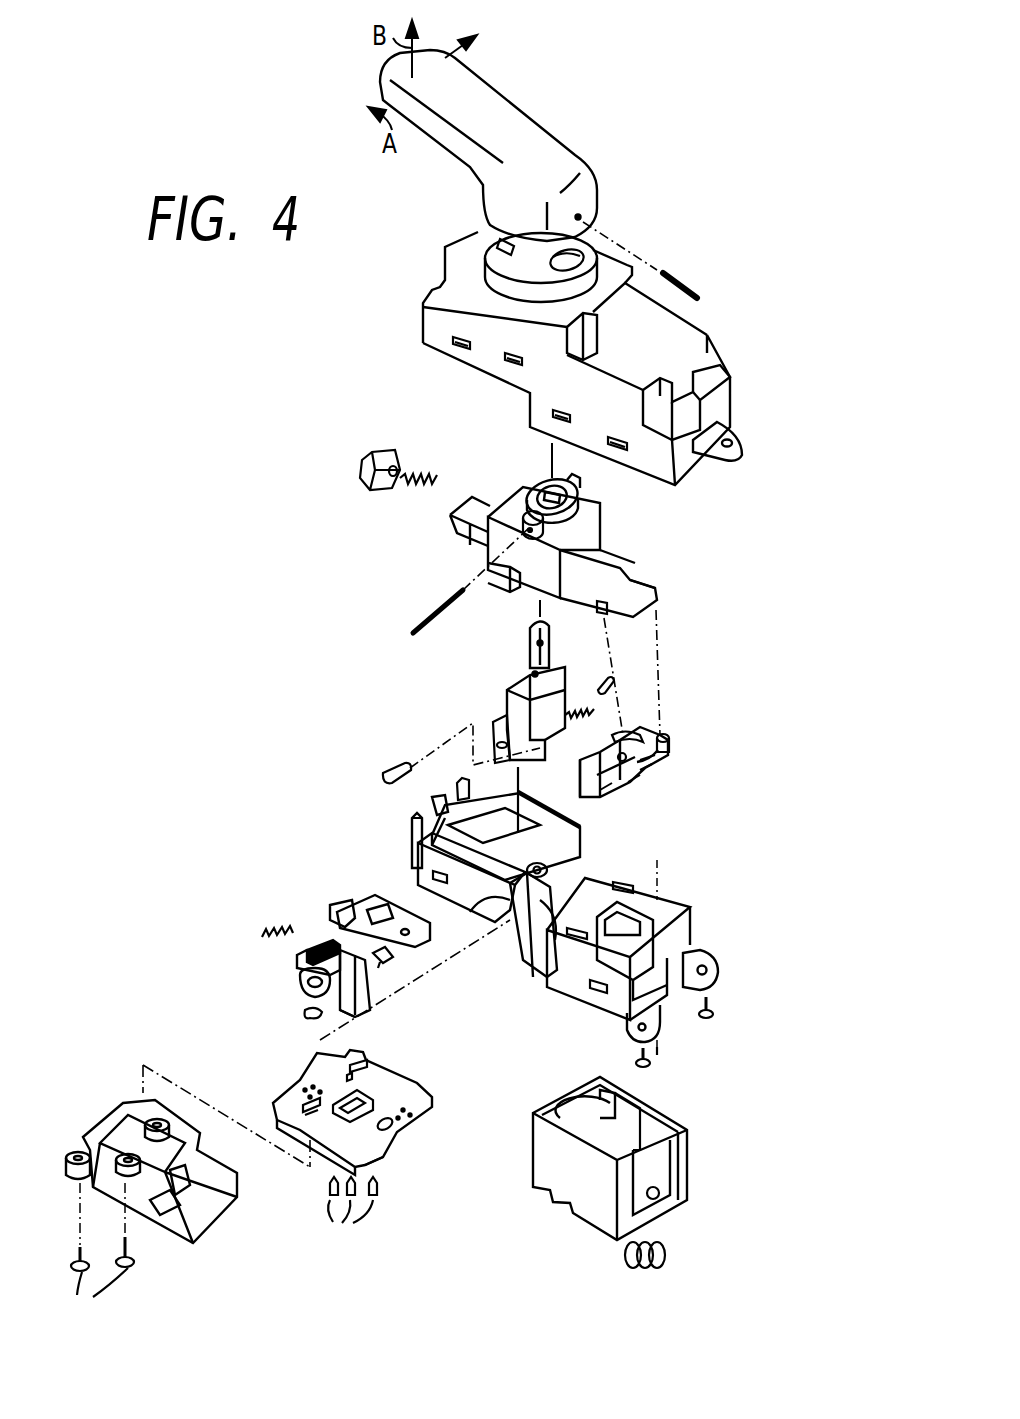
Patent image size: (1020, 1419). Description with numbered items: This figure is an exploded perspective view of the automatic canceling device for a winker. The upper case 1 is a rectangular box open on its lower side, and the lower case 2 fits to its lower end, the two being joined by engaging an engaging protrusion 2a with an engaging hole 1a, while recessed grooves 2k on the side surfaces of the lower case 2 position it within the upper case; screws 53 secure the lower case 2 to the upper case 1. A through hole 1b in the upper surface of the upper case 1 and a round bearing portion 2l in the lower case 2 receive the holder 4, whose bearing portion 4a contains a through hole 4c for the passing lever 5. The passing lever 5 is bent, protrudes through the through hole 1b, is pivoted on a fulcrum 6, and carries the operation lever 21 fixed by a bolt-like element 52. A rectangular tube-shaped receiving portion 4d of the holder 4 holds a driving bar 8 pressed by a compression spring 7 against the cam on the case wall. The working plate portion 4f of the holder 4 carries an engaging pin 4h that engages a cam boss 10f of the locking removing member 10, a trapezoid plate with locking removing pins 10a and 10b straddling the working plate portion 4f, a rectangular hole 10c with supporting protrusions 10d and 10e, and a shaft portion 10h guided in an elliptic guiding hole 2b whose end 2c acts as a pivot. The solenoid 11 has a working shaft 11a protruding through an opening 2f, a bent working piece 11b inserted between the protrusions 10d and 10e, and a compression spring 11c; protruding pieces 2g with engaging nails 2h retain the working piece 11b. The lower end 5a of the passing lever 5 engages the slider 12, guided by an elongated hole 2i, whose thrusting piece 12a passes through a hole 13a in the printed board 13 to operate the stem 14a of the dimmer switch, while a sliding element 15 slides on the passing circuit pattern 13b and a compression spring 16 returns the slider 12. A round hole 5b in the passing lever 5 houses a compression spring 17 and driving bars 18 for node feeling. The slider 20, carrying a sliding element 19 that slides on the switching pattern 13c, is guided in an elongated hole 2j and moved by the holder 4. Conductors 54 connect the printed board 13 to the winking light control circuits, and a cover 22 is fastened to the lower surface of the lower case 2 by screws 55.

The upper case 1 is at (709, 331).
The engaging hole 1a is at (460, 347).
The through hole 1b is at (573, 255).
The lower case 2 is at (690, 907).
The engaging protrusion 2a is at (437, 884).
The guiding hole 2b is at (543, 962).
The end of guiding hole 2c is at (627, 880).
The opening 2f is at (667, 950).
The protruding piece 2g is at (713, 1000).
The engaging nail 2h is at (715, 957).
The elongated hole 2i is at (410, 830).
The elongated hole 2j is at (537, 860).
The recessed groove 2k is at (503, 920).
The bearing portion 2l is at (565, 822).
The holder 4 is at (612, 560).
The bearing portion 4a is at (575, 515).
The through hole 4c is at (546, 488).
The receiving portion 4d is at (463, 495).
The working plate portion 4f is at (652, 590).
The engaging pin 4h is at (600, 614).
The passing lever 5 is at (505, 693).
The lower end of passing lever 5a is at (505, 766).
The round hole 5b is at (496, 727).
The fulcrum 6 is at (452, 597).
The compression spring 7 is at (422, 480).
The driving bar 8 is at (385, 450).
The locking removing member 10 is at (676, 748).
The locking removing pin 10a is at (665, 737).
The locking removing pin 10b is at (635, 780).
The rectangular hole 10c is at (640, 762).
The supporting protrusion 10d is at (648, 777).
The supporting protrusion 10e is at (616, 750).
The cam boss 10f is at (622, 732).
The shaft portion 10h is at (608, 787).
The solenoid 11 is at (688, 1122).
The working shaft 11a is at (657, 1195).
The working piece 11b is at (648, 1127).
The compression spring 11c is at (623, 1258).
The slider 12 is at (312, 944).
The thrusting piece 12a is at (345, 1020).
The printed board 13 is at (405, 1074).
The hole 13a is at (372, 1100).
The passing circuit pattern 13b is at (300, 1100).
The switching pattern 13c is at (367, 1063).
The stem 14a is at (378, 1138).
The sliding element 15 is at (300, 1010).
The compression spring 16 is at (268, 927).
The compression spring 17 is at (583, 693).
The driving bar 18 is at (605, 677).
The sliding element 19 is at (395, 960).
The slider 20 is at (358, 906).
The operation lever 21 is at (553, 122).
The cover 22 is at (187, 1133).
The bolt-like element 52 is at (677, 275).
The screw 53 is at (637, 1052).
The conductor 54 is at (347, 1215).
The screw 55 is at (97, 1254).